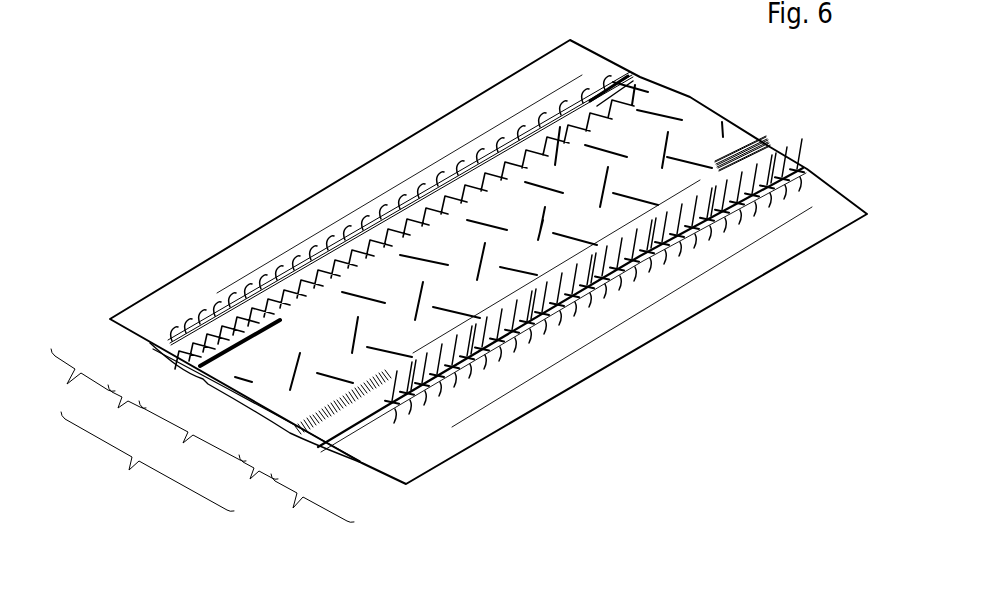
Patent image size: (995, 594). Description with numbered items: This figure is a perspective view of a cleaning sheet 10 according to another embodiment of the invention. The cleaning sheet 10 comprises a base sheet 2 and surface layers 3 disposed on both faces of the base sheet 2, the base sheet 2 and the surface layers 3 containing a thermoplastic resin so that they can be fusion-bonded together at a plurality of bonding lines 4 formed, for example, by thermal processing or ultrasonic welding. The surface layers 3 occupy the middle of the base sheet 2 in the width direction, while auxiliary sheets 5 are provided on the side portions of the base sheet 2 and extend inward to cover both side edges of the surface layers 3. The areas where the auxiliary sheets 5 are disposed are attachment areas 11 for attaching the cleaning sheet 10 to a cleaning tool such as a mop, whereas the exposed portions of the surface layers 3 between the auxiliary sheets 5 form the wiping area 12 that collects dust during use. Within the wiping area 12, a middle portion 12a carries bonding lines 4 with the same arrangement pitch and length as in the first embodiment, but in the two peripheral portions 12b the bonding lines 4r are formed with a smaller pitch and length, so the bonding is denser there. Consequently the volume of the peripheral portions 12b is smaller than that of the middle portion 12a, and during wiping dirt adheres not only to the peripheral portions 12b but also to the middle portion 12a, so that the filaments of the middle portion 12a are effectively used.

The cleaning sheet 10 is at (376, 93).
The base sheet 2 is at (150, 346).
The surface layers 3 is at (342, 451).
The bonding lines 4 is at (694, 160).
The bonding lines 4r is at (487, 150).
The auxiliary sheets 5 is at (225, 257).
The attachment areas 11 is at (201, 445).
The wiping area 12 is at (147, 461).
The middle portion 12a is at (192, 431).
The peripheral portions 12b is at (187, 439).